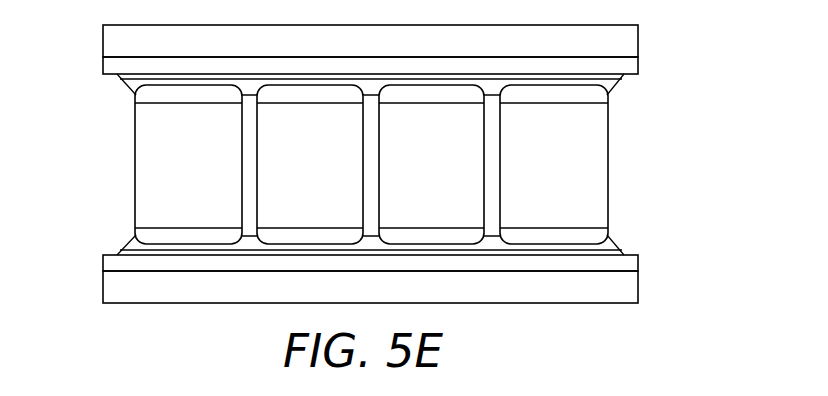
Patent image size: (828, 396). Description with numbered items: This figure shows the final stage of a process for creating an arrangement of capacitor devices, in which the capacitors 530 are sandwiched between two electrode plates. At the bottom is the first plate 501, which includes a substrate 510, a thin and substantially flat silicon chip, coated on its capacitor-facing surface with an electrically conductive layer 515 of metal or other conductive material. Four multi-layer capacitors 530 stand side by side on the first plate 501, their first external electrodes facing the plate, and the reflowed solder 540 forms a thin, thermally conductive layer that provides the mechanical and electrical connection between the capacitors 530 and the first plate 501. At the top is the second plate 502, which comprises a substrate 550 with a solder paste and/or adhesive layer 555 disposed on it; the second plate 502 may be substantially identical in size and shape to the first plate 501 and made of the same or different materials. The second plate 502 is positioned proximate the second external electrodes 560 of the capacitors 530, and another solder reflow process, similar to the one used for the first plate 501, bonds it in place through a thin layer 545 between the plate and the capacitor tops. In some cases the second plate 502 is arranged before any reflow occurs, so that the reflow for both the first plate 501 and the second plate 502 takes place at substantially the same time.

The first electrode plate 501 is at (373, 290).
The second plate 502 is at (373, 57).
The substrate 510 is at (638, 297).
The electrically conductive layer 515 is at (638, 260).
The capacitors 530 is at (342, 164).
The reflowed solder 540 is at (133, 248).
The upper bonding layer 545 is at (125, 88).
The substrate 550 is at (638, 31).
The solder paste and/or adhesive layer 555 is at (638, 66).
The second external electrodes 560 is at (213, 105).